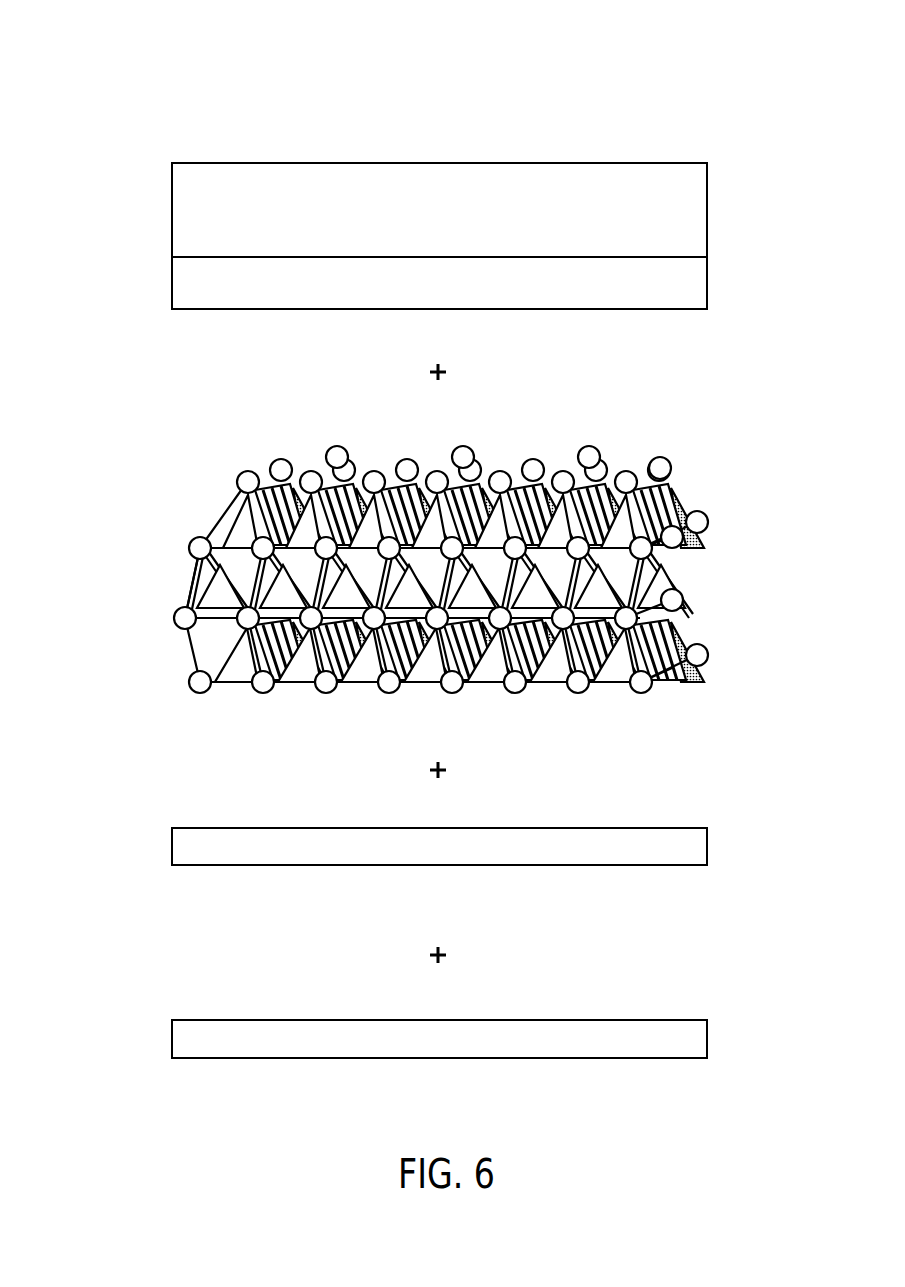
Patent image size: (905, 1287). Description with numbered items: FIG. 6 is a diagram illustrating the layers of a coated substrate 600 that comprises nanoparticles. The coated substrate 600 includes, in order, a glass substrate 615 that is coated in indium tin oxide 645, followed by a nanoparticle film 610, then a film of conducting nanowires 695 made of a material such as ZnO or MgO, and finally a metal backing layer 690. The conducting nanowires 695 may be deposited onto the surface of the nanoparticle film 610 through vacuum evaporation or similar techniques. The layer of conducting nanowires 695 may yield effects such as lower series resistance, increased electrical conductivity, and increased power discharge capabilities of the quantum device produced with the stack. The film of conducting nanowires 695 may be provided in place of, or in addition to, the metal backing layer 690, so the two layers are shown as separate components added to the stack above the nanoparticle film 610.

The coated substrate 600 is at (122, 131).
The glass substrate 615 is at (707, 212).
The indium tin oxide 645 is at (707, 273).
The nanoparticle film 610 is at (737, 450).
The film of conducting nanowires 695 is at (707, 850).
The metal backing layer 690 is at (707, 1042).